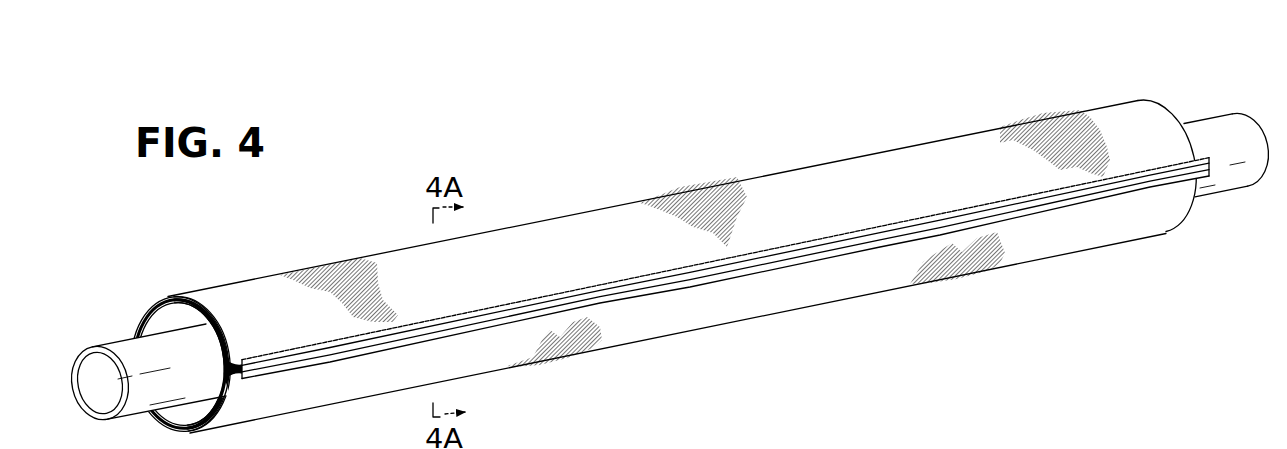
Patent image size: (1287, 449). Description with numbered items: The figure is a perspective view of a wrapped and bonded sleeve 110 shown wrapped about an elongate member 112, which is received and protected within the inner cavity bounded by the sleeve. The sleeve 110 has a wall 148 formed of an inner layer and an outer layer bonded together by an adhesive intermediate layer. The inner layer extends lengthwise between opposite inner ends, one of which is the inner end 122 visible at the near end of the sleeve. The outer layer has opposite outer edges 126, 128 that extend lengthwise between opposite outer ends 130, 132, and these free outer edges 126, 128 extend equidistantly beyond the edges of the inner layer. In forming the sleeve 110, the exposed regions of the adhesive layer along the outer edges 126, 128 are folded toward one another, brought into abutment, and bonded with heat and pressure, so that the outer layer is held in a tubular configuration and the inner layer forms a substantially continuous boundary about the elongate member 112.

The sleeve 110 is at (617, 174).
The elongate member 112 is at (1217, 195).
The inner end 122 is at (141, 312).
The outer edge 126 is at (833, 247).
The outer edge 128 is at (862, 255).
The outer end 130 is at (1172, 113).
The outer end 132 is at (229, 363).
The wall 148 is at (403, 260).